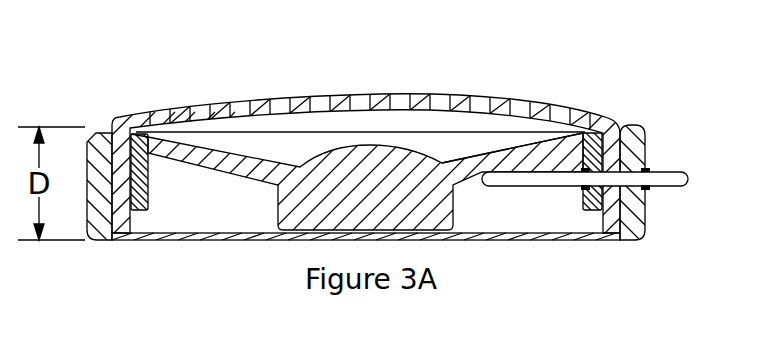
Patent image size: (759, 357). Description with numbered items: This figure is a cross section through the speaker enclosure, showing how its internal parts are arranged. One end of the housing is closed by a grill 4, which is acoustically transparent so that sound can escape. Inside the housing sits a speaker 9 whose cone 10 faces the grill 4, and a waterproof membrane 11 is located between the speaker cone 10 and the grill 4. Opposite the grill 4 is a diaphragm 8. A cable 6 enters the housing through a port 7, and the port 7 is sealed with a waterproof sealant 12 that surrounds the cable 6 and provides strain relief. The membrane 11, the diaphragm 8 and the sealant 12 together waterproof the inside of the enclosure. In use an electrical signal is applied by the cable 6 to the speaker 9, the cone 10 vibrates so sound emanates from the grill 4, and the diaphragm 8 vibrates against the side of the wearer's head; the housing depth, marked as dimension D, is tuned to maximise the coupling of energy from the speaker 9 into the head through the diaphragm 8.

The grill 4 is at (264, 110).
The cable 6 is at (683, 181).
The port 7 is at (635, 167).
The diaphragm 8 is at (534, 239).
The speaker 9 is at (530, 157).
The cone 10 is at (458, 160).
The waterproof membrane 11 is at (347, 132).
The waterproof sealant 12 is at (648, 192).